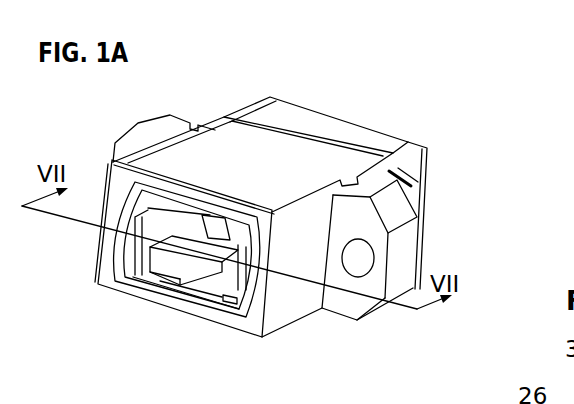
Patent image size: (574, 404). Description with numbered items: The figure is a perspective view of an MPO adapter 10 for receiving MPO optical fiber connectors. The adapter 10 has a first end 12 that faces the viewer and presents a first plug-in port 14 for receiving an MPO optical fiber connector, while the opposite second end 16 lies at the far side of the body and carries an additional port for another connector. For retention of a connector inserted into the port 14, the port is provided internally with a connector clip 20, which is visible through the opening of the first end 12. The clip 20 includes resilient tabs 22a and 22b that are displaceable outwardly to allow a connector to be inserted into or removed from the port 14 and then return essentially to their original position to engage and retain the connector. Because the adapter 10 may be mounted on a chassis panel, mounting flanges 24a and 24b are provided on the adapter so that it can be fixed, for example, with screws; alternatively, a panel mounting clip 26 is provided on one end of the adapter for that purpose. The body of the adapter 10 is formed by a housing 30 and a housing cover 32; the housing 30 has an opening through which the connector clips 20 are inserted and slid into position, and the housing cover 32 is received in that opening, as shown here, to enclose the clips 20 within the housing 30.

The MPO adapter 10 is at (406, 80).
The first end 12 is at (272, 318).
The first plug-in port 14 is at (185, 297).
The second end 16 is at (421, 162).
The connector clip 20 is at (180, 262).
The resilient tab 22a is at (187, 232).
The resilient tab 22b is at (238, 257).
The mounting flange 24a is at (137, 145).
The mounting flange 24b is at (403, 253).
The panel mounting clip 26 is at (406, 181).
The housing 30 is at (310, 122).
The housing cover 32 is at (307, 148).